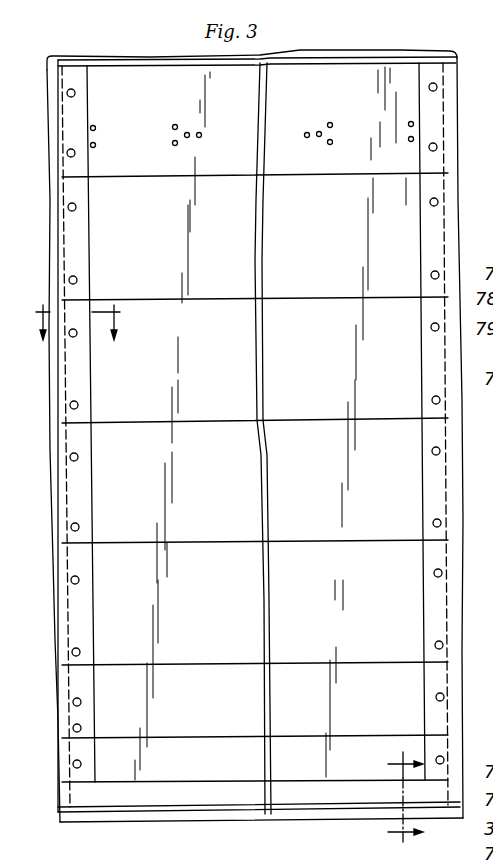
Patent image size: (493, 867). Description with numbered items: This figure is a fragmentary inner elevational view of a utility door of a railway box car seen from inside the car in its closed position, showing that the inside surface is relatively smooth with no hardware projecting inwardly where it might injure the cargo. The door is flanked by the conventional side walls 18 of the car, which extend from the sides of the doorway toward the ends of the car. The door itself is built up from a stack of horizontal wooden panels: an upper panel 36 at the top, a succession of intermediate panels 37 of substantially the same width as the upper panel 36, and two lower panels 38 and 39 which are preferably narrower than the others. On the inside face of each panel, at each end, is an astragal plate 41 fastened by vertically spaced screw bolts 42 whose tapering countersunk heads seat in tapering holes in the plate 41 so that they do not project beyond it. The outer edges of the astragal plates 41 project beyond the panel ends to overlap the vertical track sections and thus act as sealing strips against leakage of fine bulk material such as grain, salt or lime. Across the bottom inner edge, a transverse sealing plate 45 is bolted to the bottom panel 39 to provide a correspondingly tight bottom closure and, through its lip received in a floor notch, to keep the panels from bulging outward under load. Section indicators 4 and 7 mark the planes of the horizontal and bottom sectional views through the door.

The side wall 18 is at (48, 60).
The upper panel 36 is at (255, 143).
The intermediate panel 37 is at (255, 447).
The lower panel 38 is at (255, 716).
The bottom panel 39 is at (255, 767).
The astragal plate 41 is at (78, 107).
The screw bolt 42 is at (76, 204).
The transverse sealing plate 45 is at (300, 782).
The section line 4 is at (78, 307).
The section line 7 is at (396, 799).